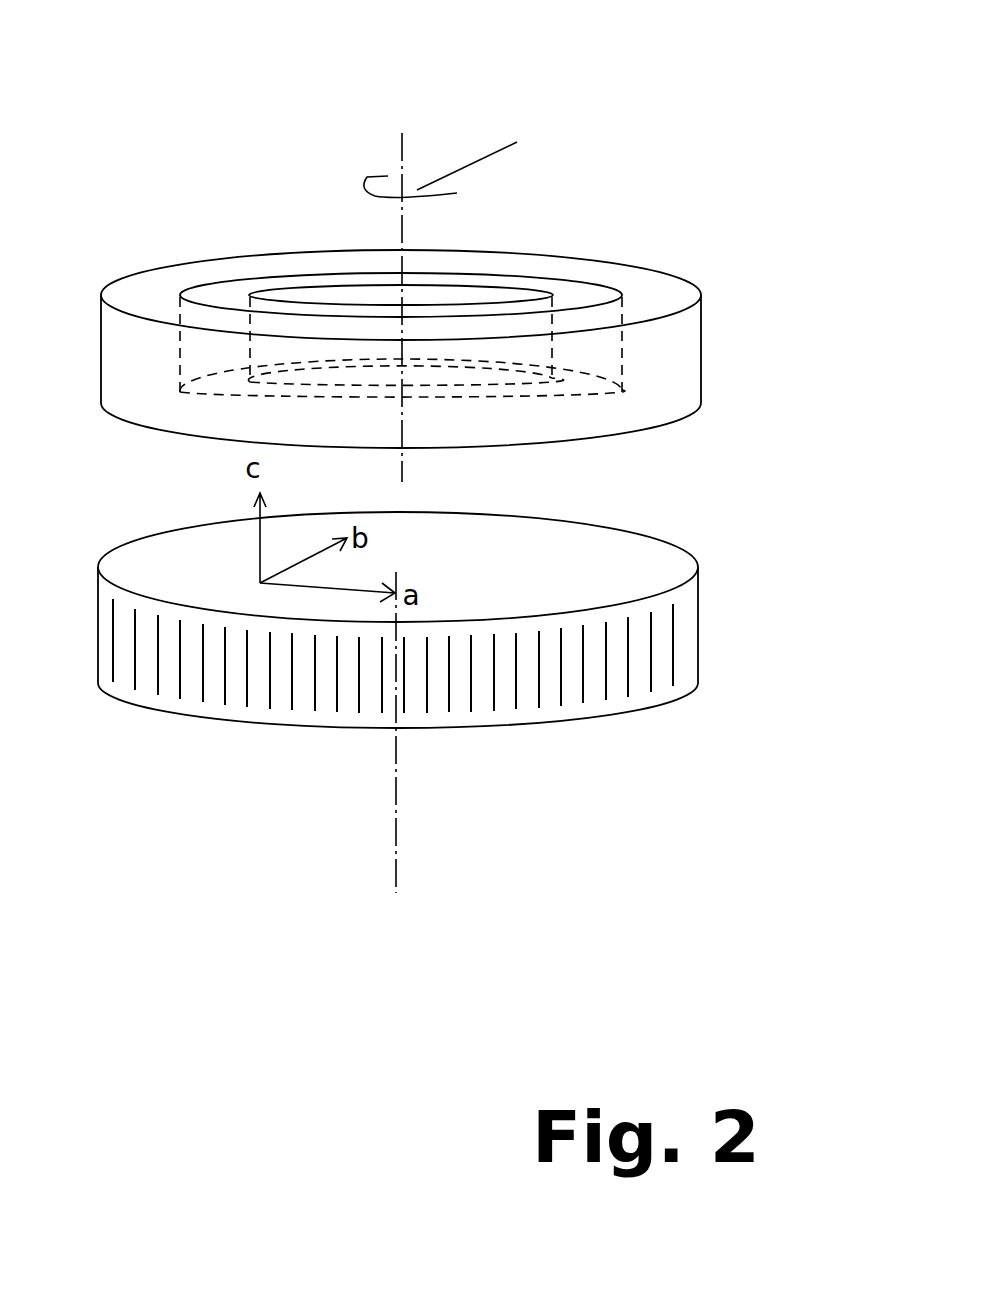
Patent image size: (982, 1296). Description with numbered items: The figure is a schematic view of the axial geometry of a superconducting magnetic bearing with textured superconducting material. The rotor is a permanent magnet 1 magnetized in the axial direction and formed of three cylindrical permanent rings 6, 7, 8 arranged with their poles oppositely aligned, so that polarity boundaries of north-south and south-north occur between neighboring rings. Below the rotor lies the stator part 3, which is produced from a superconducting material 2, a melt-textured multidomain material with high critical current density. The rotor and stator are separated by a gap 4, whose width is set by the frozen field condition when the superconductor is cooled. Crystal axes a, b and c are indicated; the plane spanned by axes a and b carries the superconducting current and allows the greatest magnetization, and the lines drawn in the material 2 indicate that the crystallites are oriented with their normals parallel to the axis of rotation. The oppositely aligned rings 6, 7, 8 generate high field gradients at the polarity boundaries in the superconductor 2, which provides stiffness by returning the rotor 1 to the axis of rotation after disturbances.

The permanent magnet 1 is at (468, 224).
The superconducting material 2 is at (469, 669).
The stator part 3 is at (592, 672).
The gap 4 is at (655, 491).
The cylindrical permanent ring 6 is at (658, 303).
The cylindrical permanent ring 7 is at (582, 297).
The cylindrical permanent ring 8 is at (330, 297).